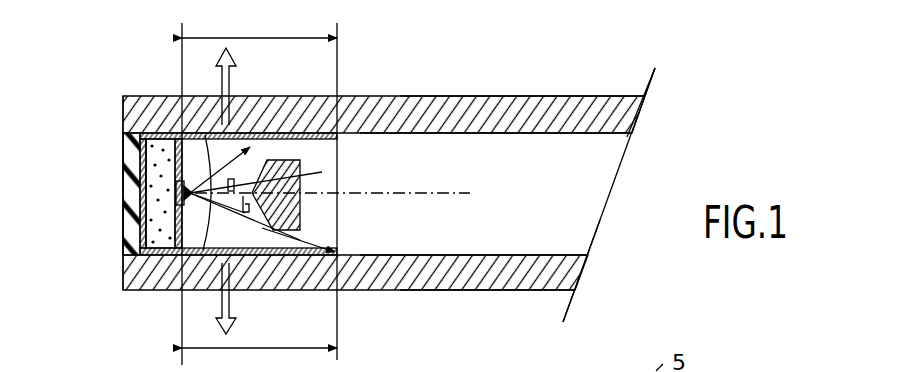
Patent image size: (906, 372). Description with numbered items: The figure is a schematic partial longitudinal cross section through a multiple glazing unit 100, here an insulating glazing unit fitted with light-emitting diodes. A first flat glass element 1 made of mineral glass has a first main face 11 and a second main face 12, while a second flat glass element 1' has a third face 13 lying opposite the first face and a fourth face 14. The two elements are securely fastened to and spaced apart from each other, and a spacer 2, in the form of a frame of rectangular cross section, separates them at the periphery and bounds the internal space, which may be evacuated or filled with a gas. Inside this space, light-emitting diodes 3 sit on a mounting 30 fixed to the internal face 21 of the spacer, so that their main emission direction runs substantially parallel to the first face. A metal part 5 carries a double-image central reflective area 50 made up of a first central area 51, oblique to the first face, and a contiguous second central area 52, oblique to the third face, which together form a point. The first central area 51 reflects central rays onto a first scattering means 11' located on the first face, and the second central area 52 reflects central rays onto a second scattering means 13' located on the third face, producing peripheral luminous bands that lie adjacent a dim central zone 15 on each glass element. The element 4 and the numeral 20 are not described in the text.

The multiple glazing unit 100 is at (615, 75).
The first flat glass element 1 is at (389, 201).
The second flat glass element 1' is at (423, 83).
The spacer 2 is at (145, 160).
The light-emitting diodes 3 is at (185, 245).
The end window 4 is at (128, 202).
The metal part 5 is at (303, 181).
The first main face 11 is at (601, 271).
The first scattering means 11' is at (163, 238).
The second main face 12 is at (533, 293).
The third face 13 is at (646, 127).
The second scattering means 13' is at (238, 95).
The fourth face 14 is at (537, 97).
The dim central zone 15 is at (407, 137).
The cavity 20 is at (477, 167).
The internal face of the spacer 21 is at (140, 258).
The mounting 30 is at (132, 220).
The central reflective area 50 is at (195, 180).
The first central area 51 is at (247, 213).
The second central area 52 is at (234, 179).